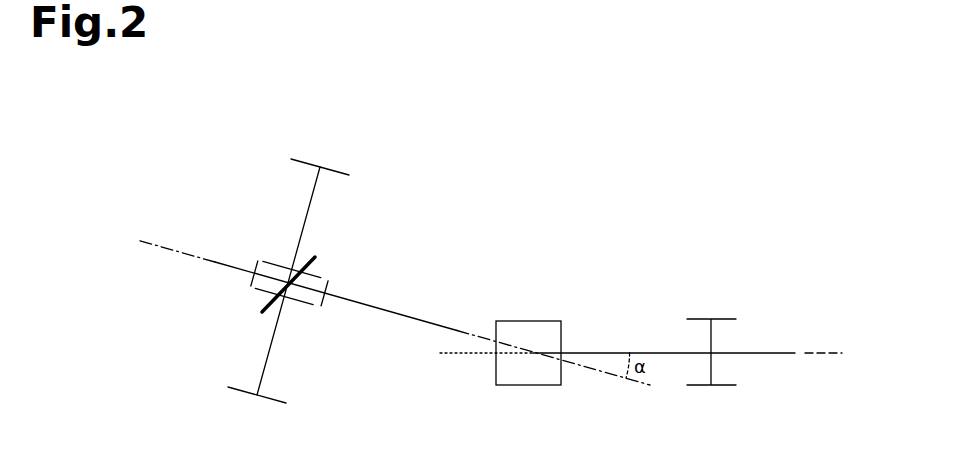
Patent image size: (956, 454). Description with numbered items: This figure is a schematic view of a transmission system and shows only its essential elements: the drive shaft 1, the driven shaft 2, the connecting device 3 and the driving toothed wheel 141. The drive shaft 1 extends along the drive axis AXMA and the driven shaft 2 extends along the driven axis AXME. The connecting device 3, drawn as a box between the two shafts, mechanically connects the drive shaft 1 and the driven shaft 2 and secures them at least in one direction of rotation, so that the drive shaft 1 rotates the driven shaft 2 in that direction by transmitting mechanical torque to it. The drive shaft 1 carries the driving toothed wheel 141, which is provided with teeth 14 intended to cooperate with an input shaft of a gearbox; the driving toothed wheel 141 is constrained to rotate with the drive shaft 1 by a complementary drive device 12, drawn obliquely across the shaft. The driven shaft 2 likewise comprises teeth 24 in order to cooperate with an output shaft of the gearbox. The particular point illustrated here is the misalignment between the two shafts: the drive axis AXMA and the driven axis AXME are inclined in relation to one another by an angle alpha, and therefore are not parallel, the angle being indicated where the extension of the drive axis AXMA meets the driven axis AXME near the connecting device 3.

The drive shaft 1 is at (372, 303).
The complementary drive device 12 is at (295, 268).
The teeth 14 is at (274, 258).
The driving toothed wheel 141 is at (270, 345).
The driven shaft 2 is at (650, 352).
The teeth 24 is at (720, 318).
The connecting device 3 is at (538, 320).
The drive axis AXMA is at (178, 250).
The driven axis AXME is at (803, 352).